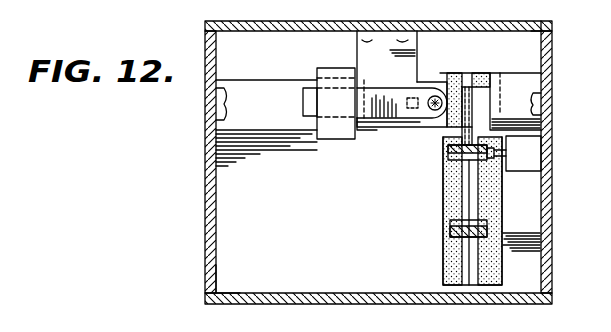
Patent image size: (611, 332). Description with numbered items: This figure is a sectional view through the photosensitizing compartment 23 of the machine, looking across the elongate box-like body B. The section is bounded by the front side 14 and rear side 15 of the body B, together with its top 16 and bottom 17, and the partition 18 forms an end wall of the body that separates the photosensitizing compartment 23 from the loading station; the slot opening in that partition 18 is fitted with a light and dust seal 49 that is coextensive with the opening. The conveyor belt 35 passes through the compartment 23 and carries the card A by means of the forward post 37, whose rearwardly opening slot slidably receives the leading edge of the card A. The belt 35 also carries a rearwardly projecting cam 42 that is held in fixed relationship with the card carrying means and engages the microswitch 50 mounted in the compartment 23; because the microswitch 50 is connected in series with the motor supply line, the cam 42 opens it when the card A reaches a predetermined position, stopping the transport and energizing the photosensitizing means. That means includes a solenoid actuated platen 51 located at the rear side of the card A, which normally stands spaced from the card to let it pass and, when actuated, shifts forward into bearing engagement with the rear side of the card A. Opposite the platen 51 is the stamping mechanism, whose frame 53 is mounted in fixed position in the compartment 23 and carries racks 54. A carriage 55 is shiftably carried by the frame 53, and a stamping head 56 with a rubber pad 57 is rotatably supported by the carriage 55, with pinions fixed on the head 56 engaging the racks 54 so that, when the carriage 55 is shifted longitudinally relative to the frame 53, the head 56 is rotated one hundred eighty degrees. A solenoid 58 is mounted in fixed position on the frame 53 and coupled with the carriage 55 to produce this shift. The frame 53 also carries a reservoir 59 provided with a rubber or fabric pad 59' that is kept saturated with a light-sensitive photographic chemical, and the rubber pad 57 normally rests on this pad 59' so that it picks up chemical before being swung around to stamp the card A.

The front side 14 is at (213, 183).
The rear side 15 is at (548, 206).
The top 16 is at (484, 23).
The bottom 17 is at (362, 301).
The partition 18 is at (233, 272).
The photosensitizing compartment 23 is at (346, 223).
The conveyor belt 35 is at (450, 148).
The forward post 37 is at (468, 130).
The cam 42 is at (490, 160).
The light and dust seal 49 is at (486, 266).
The microswitch 50 is at (534, 156).
The platen 51 is at (522, 87).
The frame 53 is at (356, 44).
The racks 54 is at (418, 96).
The carriage 55 is at (303, 105).
The stamping head 56 is at (418, 86).
The rubber pad 57 is at (462, 86).
The solenoid 58 is at (338, 139).
The reservoir 59 is at (266, 67).
The pad 59' is at (379, 128).
The card A is at (470, 105).
The body B is at (558, 23).